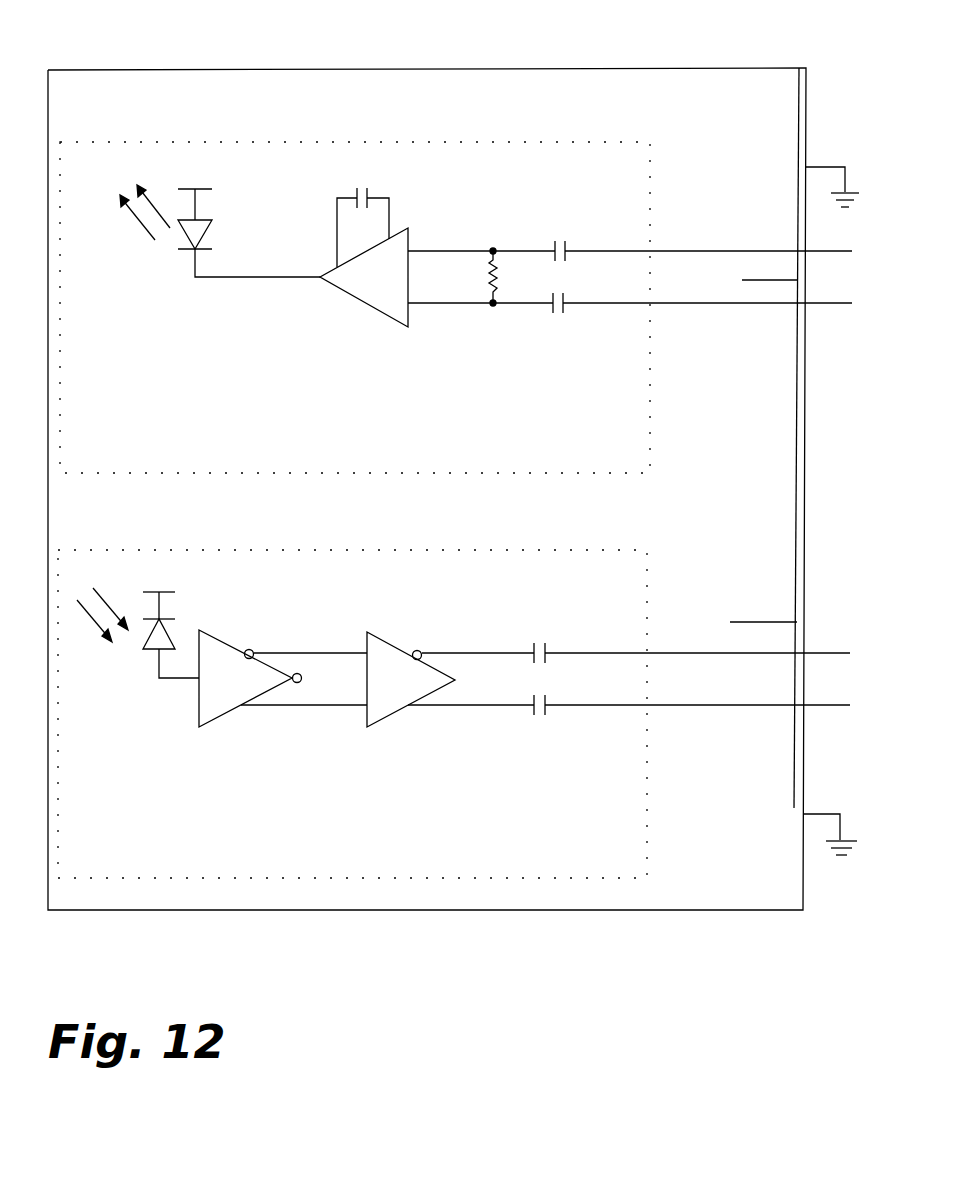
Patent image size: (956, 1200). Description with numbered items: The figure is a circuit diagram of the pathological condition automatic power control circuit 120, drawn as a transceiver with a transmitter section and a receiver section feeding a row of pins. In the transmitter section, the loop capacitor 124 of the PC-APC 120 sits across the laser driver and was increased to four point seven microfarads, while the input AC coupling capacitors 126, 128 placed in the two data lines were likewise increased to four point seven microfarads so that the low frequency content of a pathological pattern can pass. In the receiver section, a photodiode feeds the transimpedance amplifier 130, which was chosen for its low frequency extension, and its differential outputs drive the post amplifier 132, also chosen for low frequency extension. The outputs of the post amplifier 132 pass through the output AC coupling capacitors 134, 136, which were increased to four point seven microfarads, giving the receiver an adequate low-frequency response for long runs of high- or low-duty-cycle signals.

The pathological condition automatic power control (PC-APC) circuit 120 is at (281, 27).
The loop capacitor 124 is at (371, 194).
The input AC coupling capacitor 126 is at (567, 248).
The input AC coupling capacitor 128 is at (566, 308).
The transimpedance amplifier 130 is at (218, 720).
The post amplifier 132 is at (380, 722).
The output AC coupling capacitor 134 is at (547, 650).
The output AC coupling capacitor 136 is at (547, 709).